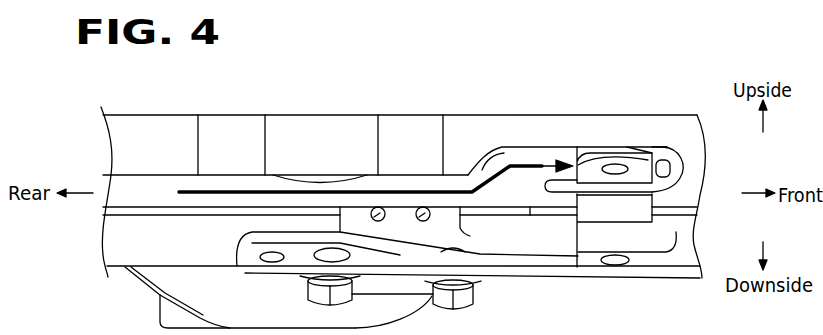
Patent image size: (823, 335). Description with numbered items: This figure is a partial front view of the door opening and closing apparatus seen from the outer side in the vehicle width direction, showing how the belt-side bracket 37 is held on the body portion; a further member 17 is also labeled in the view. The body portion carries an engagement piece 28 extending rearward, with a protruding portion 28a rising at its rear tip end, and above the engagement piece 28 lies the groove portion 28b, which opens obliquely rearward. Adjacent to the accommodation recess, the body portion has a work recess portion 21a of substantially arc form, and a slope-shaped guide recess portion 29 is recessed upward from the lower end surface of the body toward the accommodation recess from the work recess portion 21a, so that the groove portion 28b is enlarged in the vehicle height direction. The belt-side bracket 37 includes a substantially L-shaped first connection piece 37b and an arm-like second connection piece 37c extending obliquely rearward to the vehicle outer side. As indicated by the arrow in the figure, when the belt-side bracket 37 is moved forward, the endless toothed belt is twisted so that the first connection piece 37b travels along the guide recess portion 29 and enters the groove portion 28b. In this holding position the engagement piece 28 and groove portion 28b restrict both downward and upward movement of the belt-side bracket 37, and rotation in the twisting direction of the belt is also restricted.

The seat frame member 17 is at (675, 113).
The work recess portion 21a is at (317, 131).
The guide recess portion 29 is at (502, 147).
The engagement piece 28 is at (613, 195).
The protruding portion 28a is at (573, 168).
The groove portion 28b is at (673, 161).
The belt-side bracket 37 is at (578, 278).
The first connection piece 37b is at (628, 147).
The second connection piece 37c is at (242, 264).